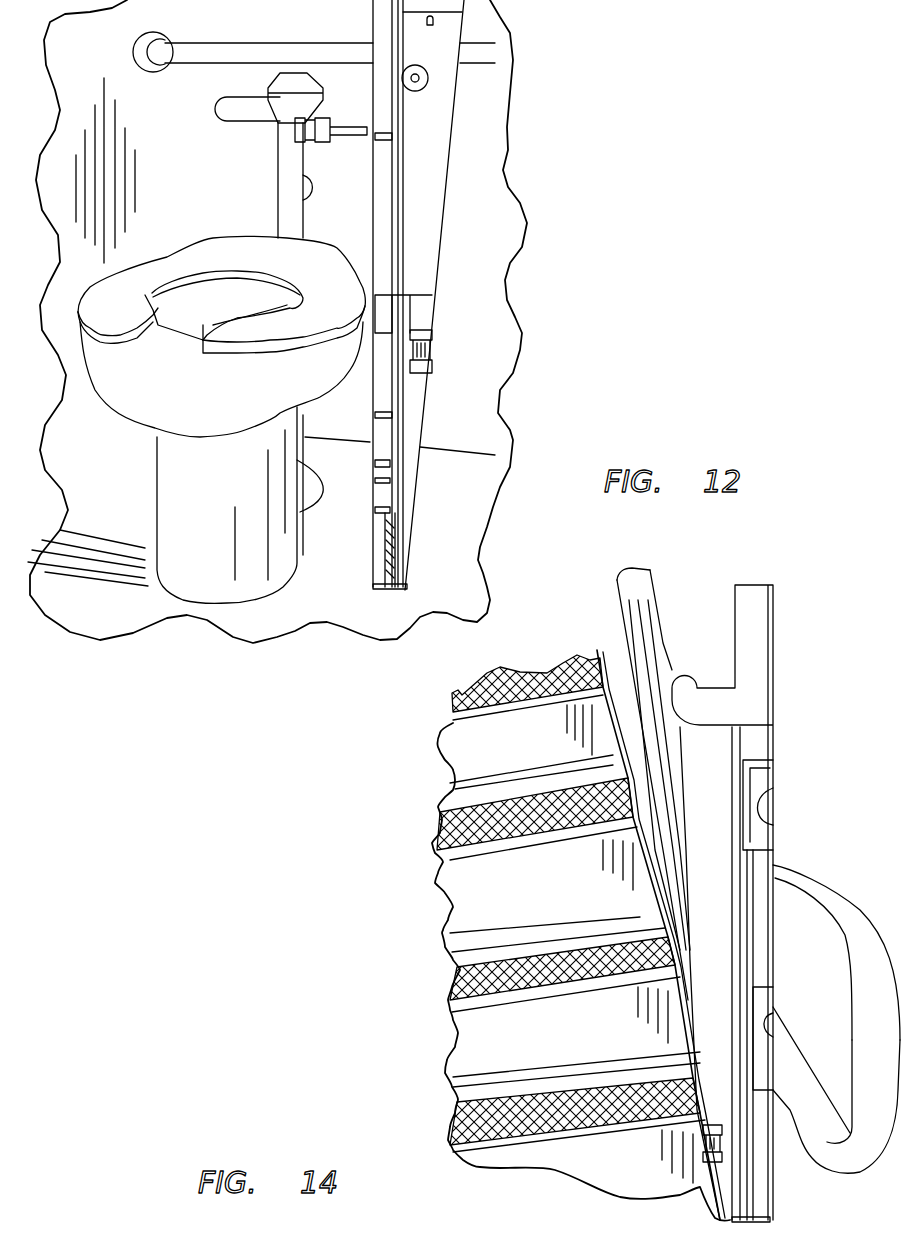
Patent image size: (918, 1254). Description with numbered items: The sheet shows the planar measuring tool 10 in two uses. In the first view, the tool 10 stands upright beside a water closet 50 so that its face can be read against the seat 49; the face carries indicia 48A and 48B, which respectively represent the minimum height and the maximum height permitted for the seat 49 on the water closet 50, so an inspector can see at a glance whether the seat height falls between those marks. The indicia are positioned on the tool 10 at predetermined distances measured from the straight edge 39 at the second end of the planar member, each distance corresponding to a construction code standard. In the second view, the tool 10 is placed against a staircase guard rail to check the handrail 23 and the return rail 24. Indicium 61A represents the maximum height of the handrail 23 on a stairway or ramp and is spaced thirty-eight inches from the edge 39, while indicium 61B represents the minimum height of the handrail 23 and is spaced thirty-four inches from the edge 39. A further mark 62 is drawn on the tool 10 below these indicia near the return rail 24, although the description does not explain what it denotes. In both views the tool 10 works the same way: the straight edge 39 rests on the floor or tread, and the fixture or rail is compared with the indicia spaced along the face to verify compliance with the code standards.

In FIG. 14, the tool 10 is at (783, 611).
In FIG. 14, the handrail 23 is at (813, 851).
In FIG. 14, the return rail 24 is at (803, 1103).
In FIG. 12, the straight edge 39 is at (385, 588).
In FIG. 12, the indicium 48A is at (380, 333).
In FIG. 12, the indicium 48B is at (380, 293).
In FIG. 12, the seat 49 is at (165, 256).
In FIG. 12, the water closet 50 is at (140, 430).
In FIG. 14, the indicium 61A is at (777, 762).
In FIG. 14, the indicium 61B is at (773, 843).
In FIG. 14, the lower bracket 62 is at (773, 987).